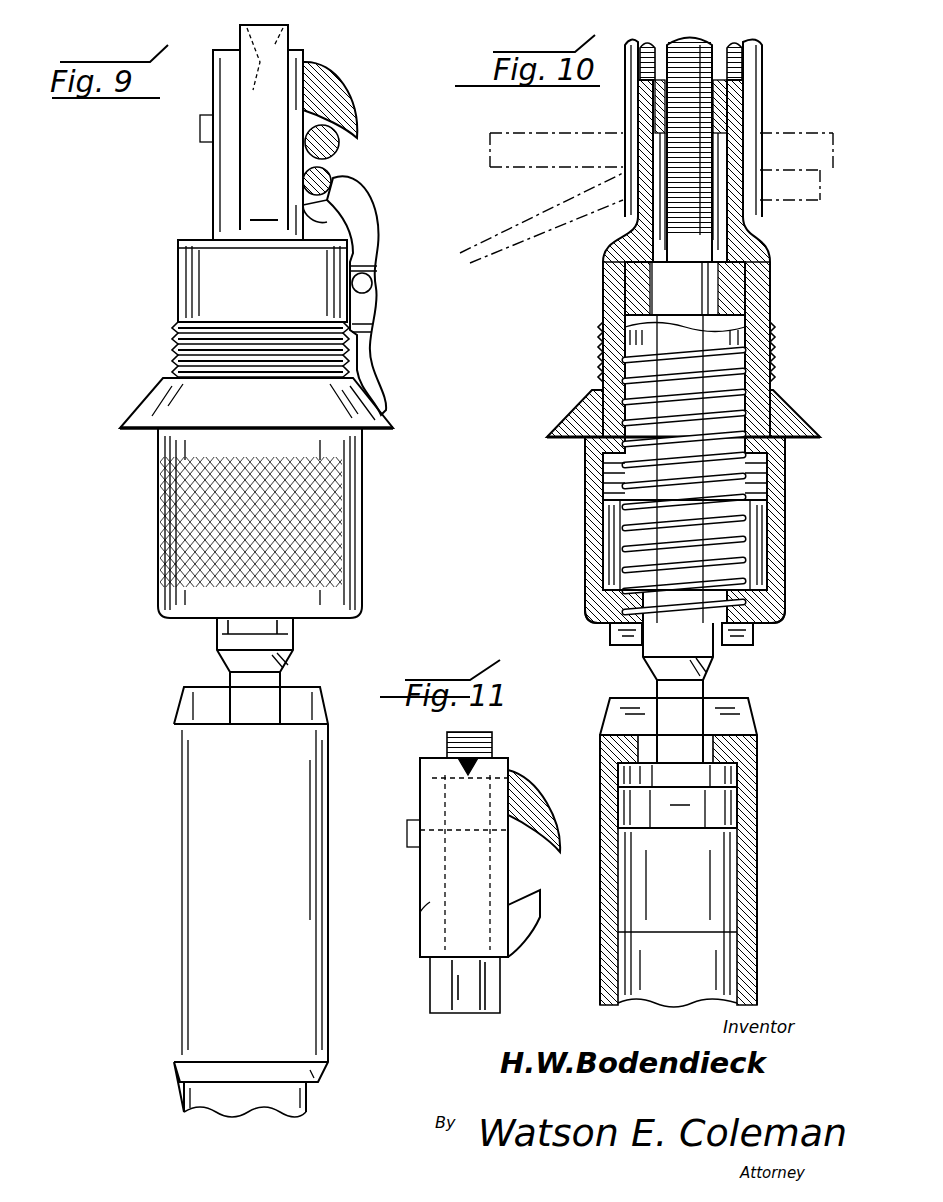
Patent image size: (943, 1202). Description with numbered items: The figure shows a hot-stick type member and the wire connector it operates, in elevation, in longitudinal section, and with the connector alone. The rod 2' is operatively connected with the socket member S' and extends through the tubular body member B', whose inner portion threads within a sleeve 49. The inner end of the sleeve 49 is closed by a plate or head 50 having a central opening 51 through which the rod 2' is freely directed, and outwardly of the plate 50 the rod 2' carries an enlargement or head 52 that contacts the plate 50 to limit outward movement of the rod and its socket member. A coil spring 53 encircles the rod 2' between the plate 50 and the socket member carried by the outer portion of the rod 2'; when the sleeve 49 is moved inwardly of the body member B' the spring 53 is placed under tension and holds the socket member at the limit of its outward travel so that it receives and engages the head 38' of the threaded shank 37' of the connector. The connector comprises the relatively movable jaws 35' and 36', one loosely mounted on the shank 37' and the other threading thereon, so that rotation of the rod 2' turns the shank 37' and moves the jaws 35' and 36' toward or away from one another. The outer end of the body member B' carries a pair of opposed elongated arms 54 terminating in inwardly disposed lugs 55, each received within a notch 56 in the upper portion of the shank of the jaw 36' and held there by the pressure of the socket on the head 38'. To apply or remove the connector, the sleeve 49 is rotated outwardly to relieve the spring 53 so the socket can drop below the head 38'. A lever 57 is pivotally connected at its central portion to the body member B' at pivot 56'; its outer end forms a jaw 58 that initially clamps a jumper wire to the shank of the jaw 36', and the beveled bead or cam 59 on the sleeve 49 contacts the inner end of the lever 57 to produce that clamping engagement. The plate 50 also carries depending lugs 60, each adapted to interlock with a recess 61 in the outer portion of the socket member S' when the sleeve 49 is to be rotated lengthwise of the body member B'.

In FIG. 9, the lug 55 is at (270, 27).
In FIG. 10, the lug 55 is at (649, 44).
In FIG. 9, the notch 56 is at (265, 67).
In FIG. 11, the notch 56 is at (444, 851).
In FIG. 9, the elongated arm 54 is at (247, 178).
In FIG. 10, the elongated arm 54 is at (630, 147).
In FIG. 9, the jaw 35' is at (339, 91).
In FIG. 11, the jaw 35' is at (542, 811).
In FIG. 9, the jaw 58 is at (338, 181).
In FIG. 9, the jaw 36' is at (361, 196).
In FIG. 11, the jaw 36' is at (542, 911).
In FIG. 9, the lever 57 is at (373, 235).
In FIG. 9, the pivot 56' is at (391, 293).
In FIG. 9, the tubular body member B' is at (229, 308).
In FIG. 10, the tubular body member B' is at (651, 378).
In FIG. 9, the beveled bead or cam 59 is at (152, 401).
In FIG. 10, the beveled bead or cam 59 is at (585, 412).
In FIG. 9, the sleeve 49 is at (160, 526).
In FIG. 10, the sleeve 49 is at (590, 478).
In FIG. 9, the rod 2' is at (226, 671).
In FIG. 10, the rod 2' is at (645, 469).
In FIG. 9, the lug 60 is at (265, 626).
In FIG. 10, the lug 60 is at (620, 646).
In FIG. 9, the recess 61 is at (288, 700).
In FIG. 10, the recess 61 is at (615, 712).
In FIG. 9, the socket member S' is at (227, 902).
In FIG. 10, the socket member S' is at (697, 852).
In FIG. 10, the threaded shank 37' is at (645, 150).
In FIG. 10, the head 38' is at (644, 297).
In FIG. 10, the coil spring 53 is at (700, 378).
In FIG. 10, the central opening 51 is at (606, 627).
In FIG. 10, the enlargement or head 52 is at (670, 623).
In FIG. 10, the plate or head 50 is at (762, 634).